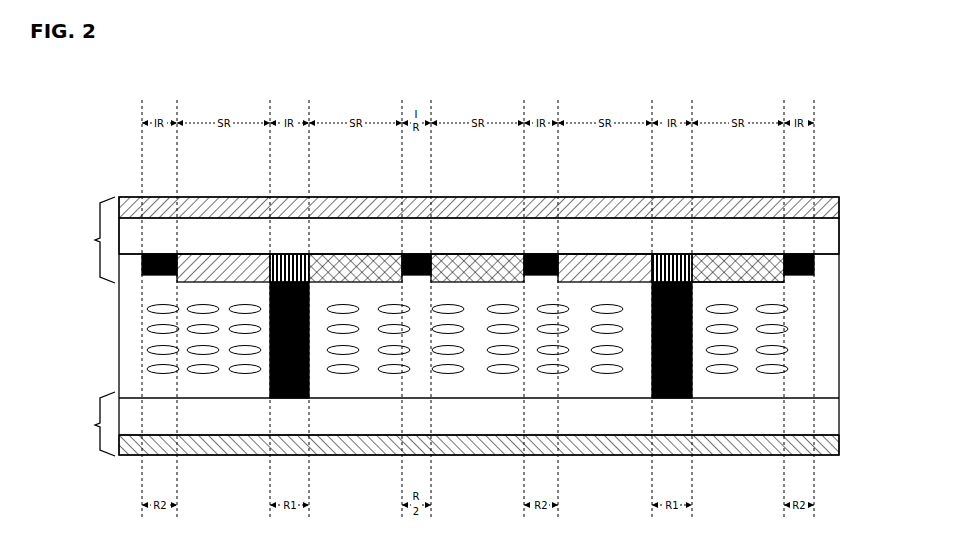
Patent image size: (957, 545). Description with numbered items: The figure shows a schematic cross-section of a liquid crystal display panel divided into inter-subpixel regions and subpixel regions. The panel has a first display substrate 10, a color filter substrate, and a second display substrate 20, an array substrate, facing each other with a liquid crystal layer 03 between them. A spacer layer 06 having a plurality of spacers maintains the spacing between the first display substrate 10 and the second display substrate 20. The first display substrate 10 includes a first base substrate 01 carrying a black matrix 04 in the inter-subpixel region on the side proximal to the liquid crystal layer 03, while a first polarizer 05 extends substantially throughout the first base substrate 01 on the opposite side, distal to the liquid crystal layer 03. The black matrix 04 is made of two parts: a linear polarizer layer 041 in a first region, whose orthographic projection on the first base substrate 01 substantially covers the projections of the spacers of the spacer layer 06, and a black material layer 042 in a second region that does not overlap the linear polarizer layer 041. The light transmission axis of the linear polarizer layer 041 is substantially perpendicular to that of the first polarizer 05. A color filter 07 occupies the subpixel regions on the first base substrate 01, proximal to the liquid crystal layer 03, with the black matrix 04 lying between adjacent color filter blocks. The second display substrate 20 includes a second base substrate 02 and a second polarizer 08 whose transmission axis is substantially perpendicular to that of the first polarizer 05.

The first display substrate 10 is at (95, 240).
The second display substrate 20 is at (95, 425).
The first base substrate 01 is at (808, 235).
The second base substrate 02 is at (805, 421).
The liquid crystal layer 03 is at (800, 336).
The black matrix 04 is at (820, 266).
The linear polarizer layer 041 is at (290, 255).
The black material layer 042 is at (415, 255).
The first polarizer 05 is at (685, 198).
The spacer layer 06 is at (283, 398).
The color filter 07 is at (755, 282).
The second polarizer 08 is at (665, 455).